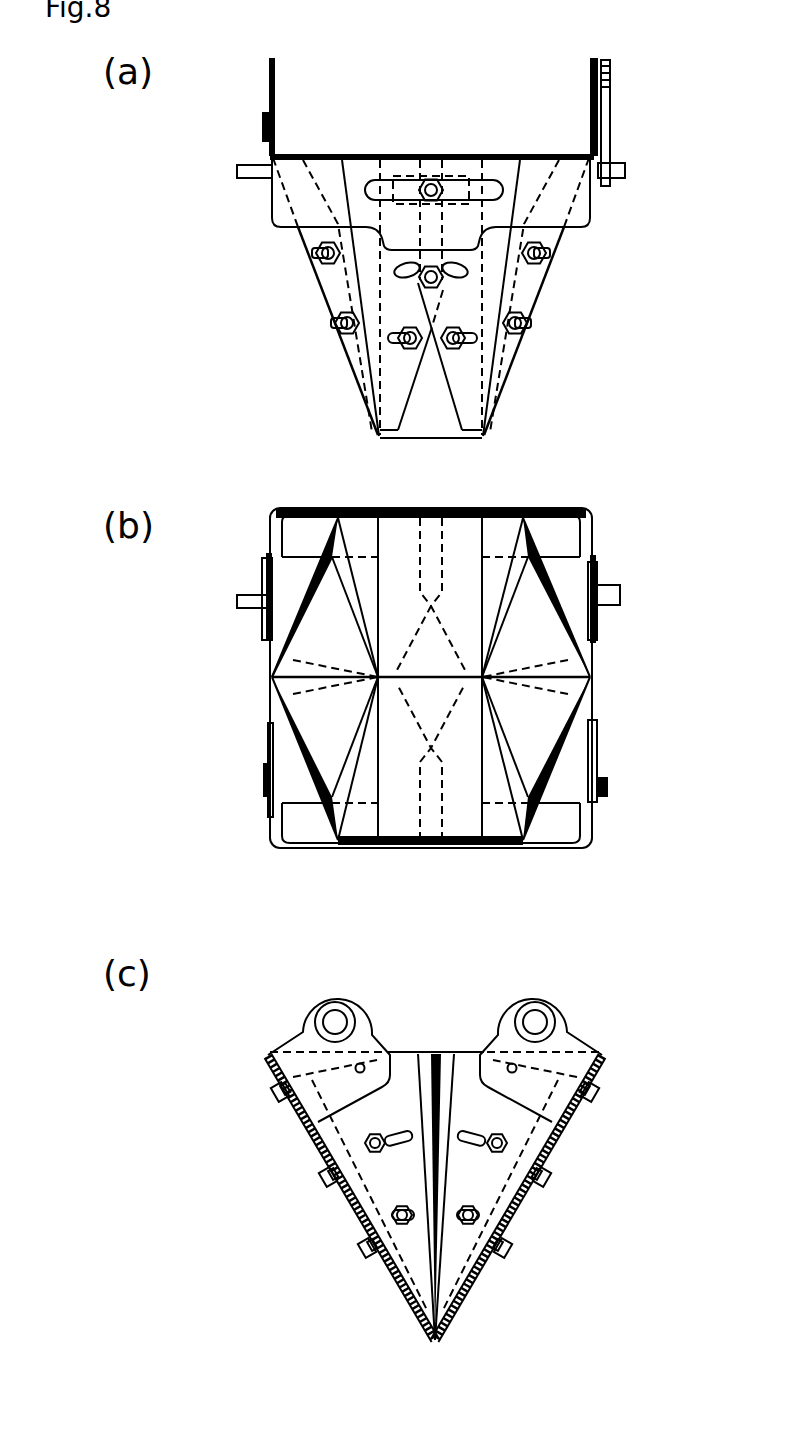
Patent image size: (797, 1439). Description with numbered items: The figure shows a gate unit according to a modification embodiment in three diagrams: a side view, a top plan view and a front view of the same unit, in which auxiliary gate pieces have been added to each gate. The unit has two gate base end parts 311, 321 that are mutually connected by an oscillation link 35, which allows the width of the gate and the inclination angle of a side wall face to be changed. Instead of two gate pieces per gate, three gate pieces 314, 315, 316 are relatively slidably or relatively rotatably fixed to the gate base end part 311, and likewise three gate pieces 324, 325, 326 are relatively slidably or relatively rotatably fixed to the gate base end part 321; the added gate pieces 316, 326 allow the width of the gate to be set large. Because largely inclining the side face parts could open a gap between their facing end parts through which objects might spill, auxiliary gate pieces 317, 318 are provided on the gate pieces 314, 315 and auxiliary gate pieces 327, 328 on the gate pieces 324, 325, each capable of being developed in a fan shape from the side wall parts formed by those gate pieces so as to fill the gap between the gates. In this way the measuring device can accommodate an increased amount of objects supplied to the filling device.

The gate base end part 311 is at (293, 157).
The oscillation link 35 is at (612, 110).
The gate piece 314 is at (326, 308).
The gate piece 315 is at (540, 306).
The gate piece 316 is at (426, 444).
The auxiliary gate piece 317 is at (302, 264).
The auxiliary gate piece 318 is at (551, 282).
The gate base end part 321 is at (326, 513).
The gate piece 324 is at (543, 530).
The gate piece 325 is at (300, 578).
The gate piece 326 is at (444, 518).
The auxiliary gate piece 327 is at (588, 668).
The auxiliary gate piece 328 is at (273, 667).